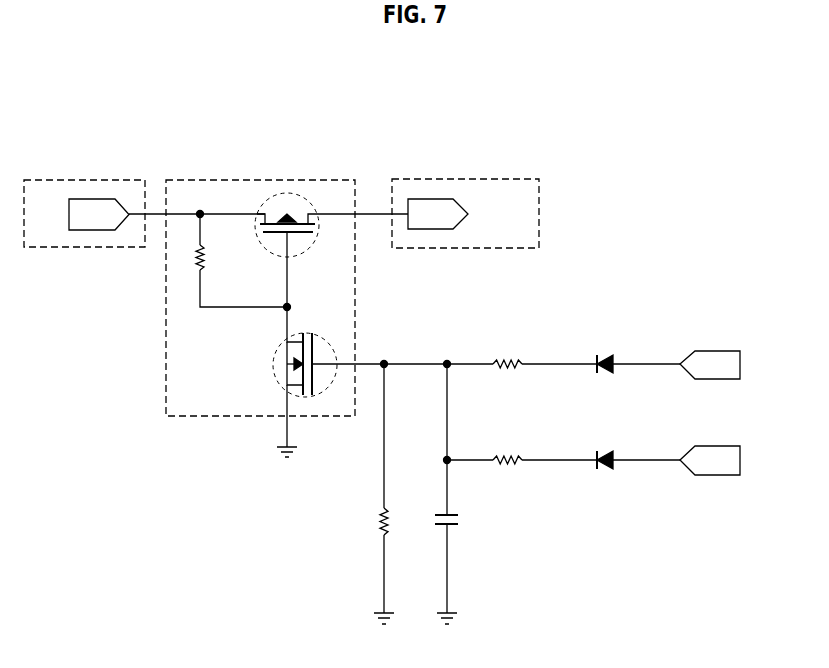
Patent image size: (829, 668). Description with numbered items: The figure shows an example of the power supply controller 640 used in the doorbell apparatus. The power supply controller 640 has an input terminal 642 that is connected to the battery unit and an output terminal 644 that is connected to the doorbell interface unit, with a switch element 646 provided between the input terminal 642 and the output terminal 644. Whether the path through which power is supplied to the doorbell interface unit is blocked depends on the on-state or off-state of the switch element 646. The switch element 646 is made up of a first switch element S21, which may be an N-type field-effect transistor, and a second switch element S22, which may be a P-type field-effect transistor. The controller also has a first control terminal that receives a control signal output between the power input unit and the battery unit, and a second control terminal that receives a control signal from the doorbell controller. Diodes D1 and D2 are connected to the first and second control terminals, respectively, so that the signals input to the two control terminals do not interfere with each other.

The power supply controller 640 is at (546, 127).
The input terminal 642 is at (88, 178).
The output terminal 644 is at (467, 177).
The switch element 646 is at (264, 178).
The first switch element S21 is at (309, 356).
The second switch element S22 is at (295, 250).
The diode D1 is at (605, 380).
The diode D2 is at (605, 475).